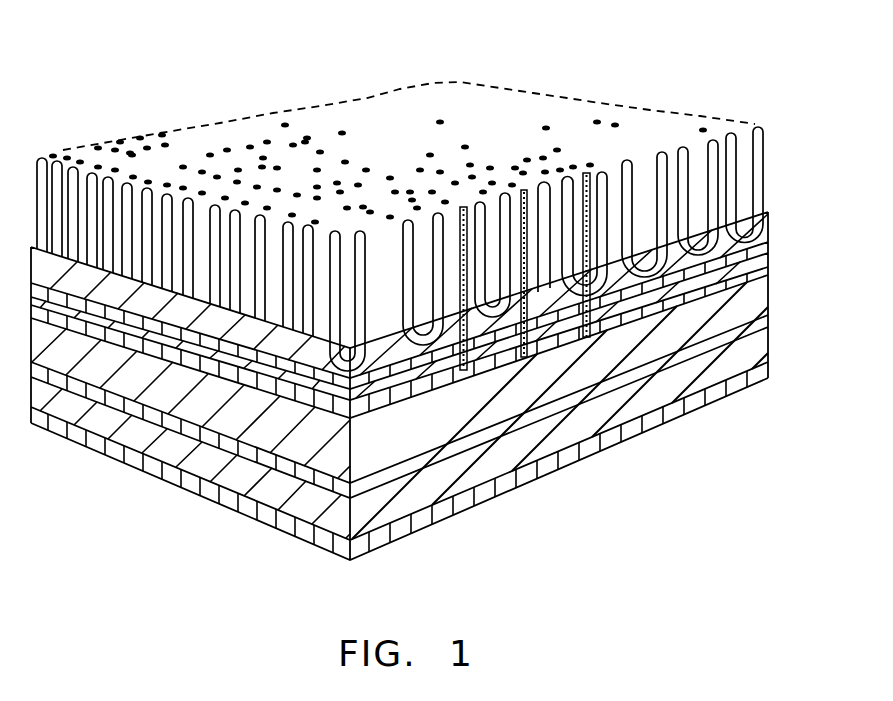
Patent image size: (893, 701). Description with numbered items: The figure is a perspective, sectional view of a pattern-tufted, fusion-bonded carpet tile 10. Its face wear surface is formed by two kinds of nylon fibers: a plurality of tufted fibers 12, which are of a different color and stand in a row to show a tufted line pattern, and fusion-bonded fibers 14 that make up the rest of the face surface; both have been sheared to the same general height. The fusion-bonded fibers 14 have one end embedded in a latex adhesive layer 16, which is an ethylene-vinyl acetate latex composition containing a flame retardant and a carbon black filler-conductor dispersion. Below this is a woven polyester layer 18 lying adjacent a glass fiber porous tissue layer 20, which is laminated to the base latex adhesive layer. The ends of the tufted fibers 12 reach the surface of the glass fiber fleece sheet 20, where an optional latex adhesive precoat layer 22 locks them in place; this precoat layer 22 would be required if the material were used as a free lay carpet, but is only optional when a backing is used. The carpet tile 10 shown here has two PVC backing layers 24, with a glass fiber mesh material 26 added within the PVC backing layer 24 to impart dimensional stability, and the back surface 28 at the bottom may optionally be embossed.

The pattern-tufted, fusion-bonded carpet tile 10 is at (297, 43).
The tufted fibers 12 is at (320, 150).
The fusion-bonded fibers 14 is at (227, 150).
The latex adhesive layer 16 is at (768, 215).
The woven polyester layer 18 is at (768, 230).
The glass fiber porous tissue layer 20 is at (768, 252).
The latex adhesive precoat layer 22 is at (768, 273).
The PVC backing layers 24 is at (768, 293).
The glass fiber mesh material 26 is at (768, 320).
The back surface 28 is at (768, 362).